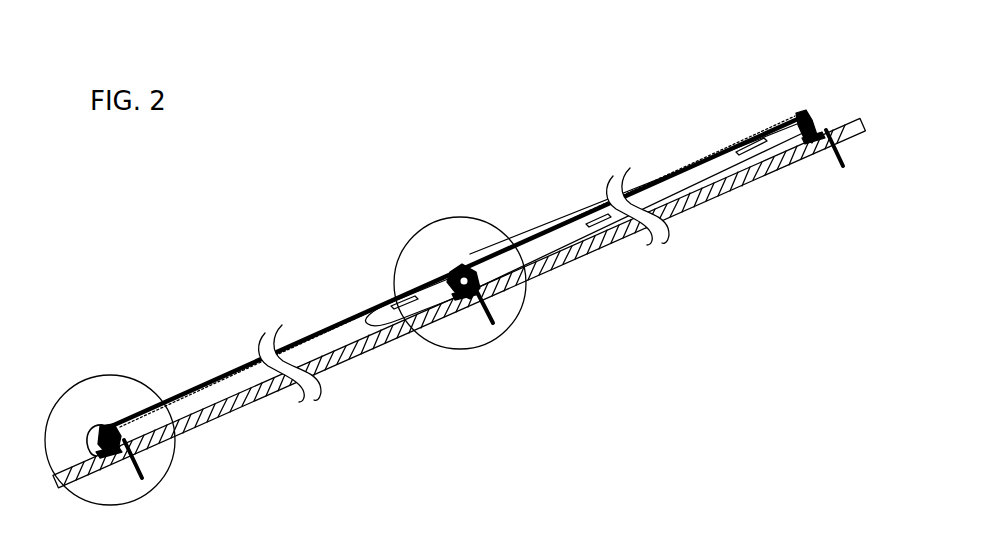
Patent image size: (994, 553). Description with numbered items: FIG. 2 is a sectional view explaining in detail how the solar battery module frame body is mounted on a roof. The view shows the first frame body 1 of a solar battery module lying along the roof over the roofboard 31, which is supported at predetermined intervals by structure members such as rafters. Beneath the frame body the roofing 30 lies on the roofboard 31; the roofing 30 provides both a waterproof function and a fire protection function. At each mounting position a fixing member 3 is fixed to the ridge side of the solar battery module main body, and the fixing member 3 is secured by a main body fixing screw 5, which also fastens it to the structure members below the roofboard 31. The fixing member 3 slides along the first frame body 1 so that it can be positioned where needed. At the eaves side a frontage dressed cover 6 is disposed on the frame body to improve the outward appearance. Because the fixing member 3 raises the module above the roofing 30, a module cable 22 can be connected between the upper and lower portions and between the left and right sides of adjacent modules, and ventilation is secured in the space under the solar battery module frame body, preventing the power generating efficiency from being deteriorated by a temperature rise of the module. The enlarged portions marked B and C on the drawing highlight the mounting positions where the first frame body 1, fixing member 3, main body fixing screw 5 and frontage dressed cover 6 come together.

The first frame body 1 is at (107, 428).
The fixing member 3 is at (117, 453).
The main body fixing screw 5 is at (140, 468).
The frontage dressed cover 6 is at (92, 432).
The module cable 22 is at (540, 258).
The roofing 30 is at (217, 408).
The roofboard 31 is at (260, 400).
The enlarged portion B is at (397, 269).
The enlarged portion C is at (72, 386).